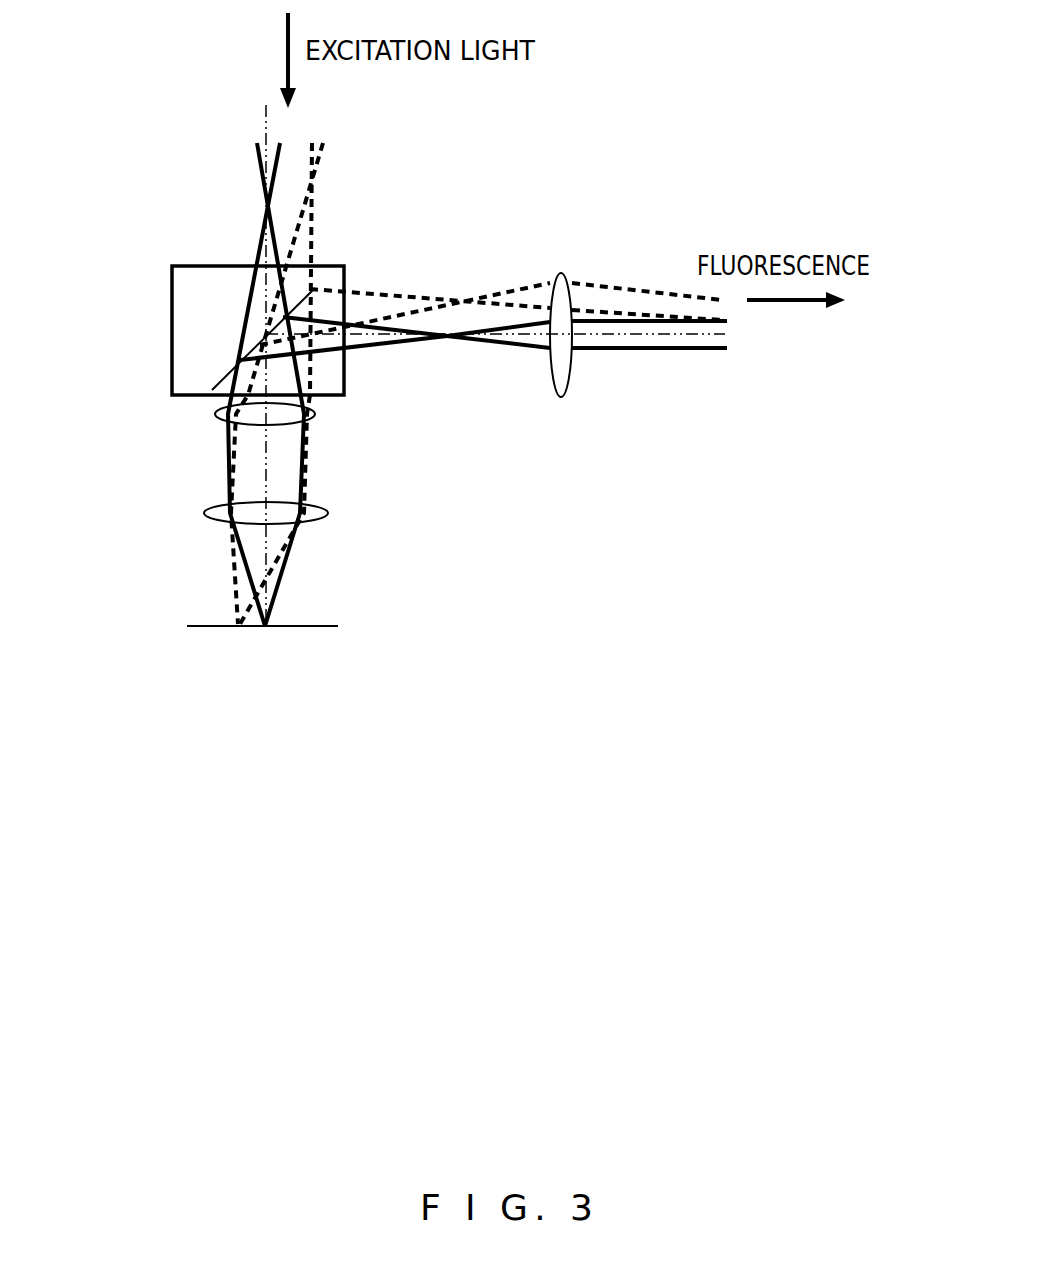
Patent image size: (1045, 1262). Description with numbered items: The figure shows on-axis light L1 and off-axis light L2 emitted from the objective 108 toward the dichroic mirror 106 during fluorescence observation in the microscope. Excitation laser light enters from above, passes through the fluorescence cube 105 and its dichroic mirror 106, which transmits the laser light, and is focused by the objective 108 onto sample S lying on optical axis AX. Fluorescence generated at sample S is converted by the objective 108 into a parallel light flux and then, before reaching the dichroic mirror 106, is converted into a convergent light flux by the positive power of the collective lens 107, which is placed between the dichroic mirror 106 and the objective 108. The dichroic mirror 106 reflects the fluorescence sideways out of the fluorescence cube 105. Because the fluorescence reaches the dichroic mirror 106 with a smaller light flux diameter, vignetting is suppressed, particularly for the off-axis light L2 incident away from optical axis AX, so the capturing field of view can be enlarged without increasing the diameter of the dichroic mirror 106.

The fluorescence cube 105 is at (327, 266).
The dichroic mirror 106 is at (217, 388).
The collective lens 107 is at (215, 414).
The objective 108 is at (204, 513).
The optical axis AX is at (267, 475).
The sample S is at (208, 626).
The on-axis light L1 is at (630, 323).
The off-axis light L2 is at (588, 310).